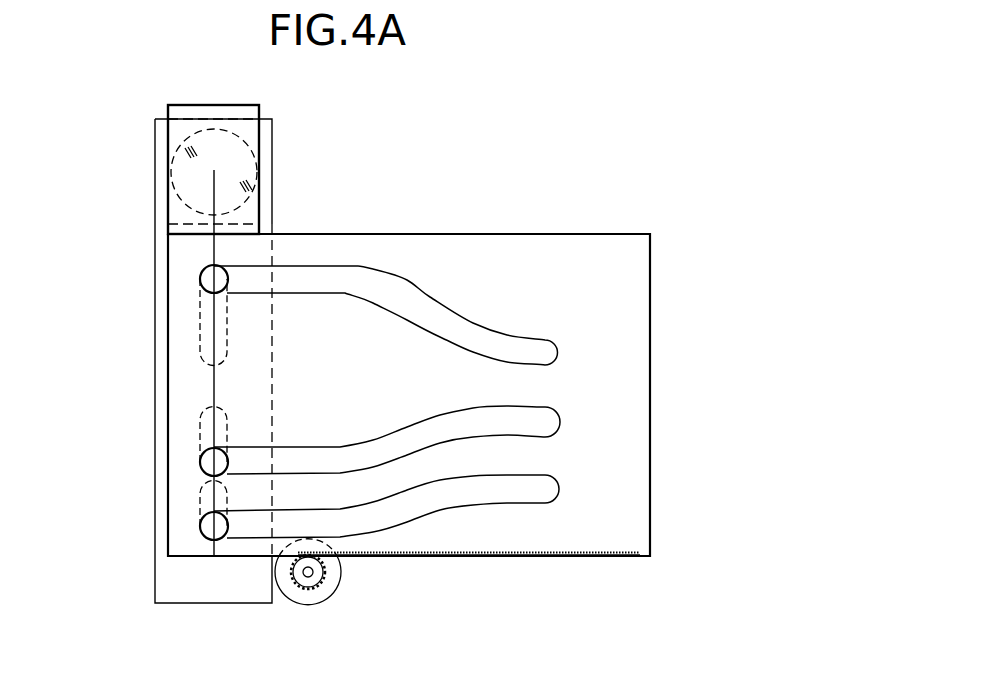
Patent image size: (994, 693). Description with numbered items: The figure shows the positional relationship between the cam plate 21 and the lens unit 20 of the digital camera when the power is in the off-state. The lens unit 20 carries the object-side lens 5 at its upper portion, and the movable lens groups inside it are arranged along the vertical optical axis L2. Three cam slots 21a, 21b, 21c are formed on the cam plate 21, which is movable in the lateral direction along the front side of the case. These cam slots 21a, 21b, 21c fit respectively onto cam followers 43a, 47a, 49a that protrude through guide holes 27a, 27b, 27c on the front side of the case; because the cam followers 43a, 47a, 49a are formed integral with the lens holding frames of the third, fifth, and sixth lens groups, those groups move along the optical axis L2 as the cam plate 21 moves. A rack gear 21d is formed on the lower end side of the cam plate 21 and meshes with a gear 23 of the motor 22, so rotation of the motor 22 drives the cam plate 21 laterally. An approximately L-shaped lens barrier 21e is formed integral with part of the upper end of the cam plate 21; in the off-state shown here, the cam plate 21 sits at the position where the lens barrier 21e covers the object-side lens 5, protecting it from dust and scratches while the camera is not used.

The object-side lens 5 is at (171, 172).
The lens unit 20 is at (278, 138).
The cam plate 21 is at (323, 222).
The cam slot 21a is at (437, 300).
The cam slot 21b is at (343, 447).
The cam slot 21c is at (498, 477).
The rack gear 21d is at (488, 557).
The lens barrier 21e is at (200, 105).
The motor 22 is at (325, 600).
The gear 23 is at (297, 588).
The guide hole 27a is at (227, 322).
The guide hole 27b is at (218, 411).
The guide hole 27c is at (228, 497).
The cam follower 43a is at (201, 272).
The cam follower 47a is at (201, 459).
The cam follower 49a is at (201, 523).
The optical axis L2 is at (214, 390).